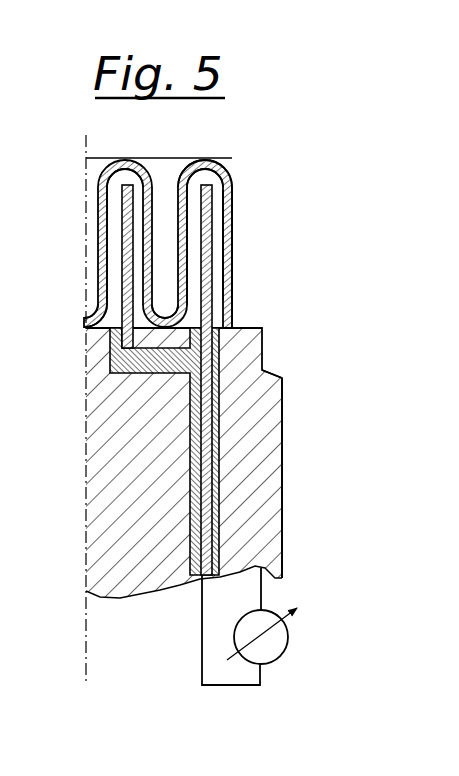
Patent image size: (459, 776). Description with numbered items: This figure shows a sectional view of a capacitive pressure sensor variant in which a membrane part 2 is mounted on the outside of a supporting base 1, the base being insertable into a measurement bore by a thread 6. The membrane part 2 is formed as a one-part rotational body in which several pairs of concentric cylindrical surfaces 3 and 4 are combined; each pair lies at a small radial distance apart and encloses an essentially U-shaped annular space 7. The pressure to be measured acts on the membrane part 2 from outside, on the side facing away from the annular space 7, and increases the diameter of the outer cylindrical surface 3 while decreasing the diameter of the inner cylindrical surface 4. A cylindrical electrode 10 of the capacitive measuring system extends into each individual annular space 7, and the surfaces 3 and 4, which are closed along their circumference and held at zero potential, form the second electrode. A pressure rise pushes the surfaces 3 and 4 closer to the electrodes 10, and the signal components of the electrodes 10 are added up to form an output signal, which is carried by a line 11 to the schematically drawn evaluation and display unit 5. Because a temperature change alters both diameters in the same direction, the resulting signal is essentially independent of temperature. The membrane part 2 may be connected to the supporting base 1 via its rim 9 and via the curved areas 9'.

The supporting base 1 is at (105, 452).
The membrane part 2 is at (236, 170).
The cylindrical surface 3 is at (178, 183).
The cylindrical surface 4 is at (147, 249).
The evaluation and display unit 5 is at (277, 638).
The thread 6 is at (272, 478).
The annular space 7 is at (115, 205).
The rim 9 is at (201, 424).
The curved area 9' is at (108, 321).
The cylindrical electrode 10 is at (121, 260).
The line 11 is at (199, 610).